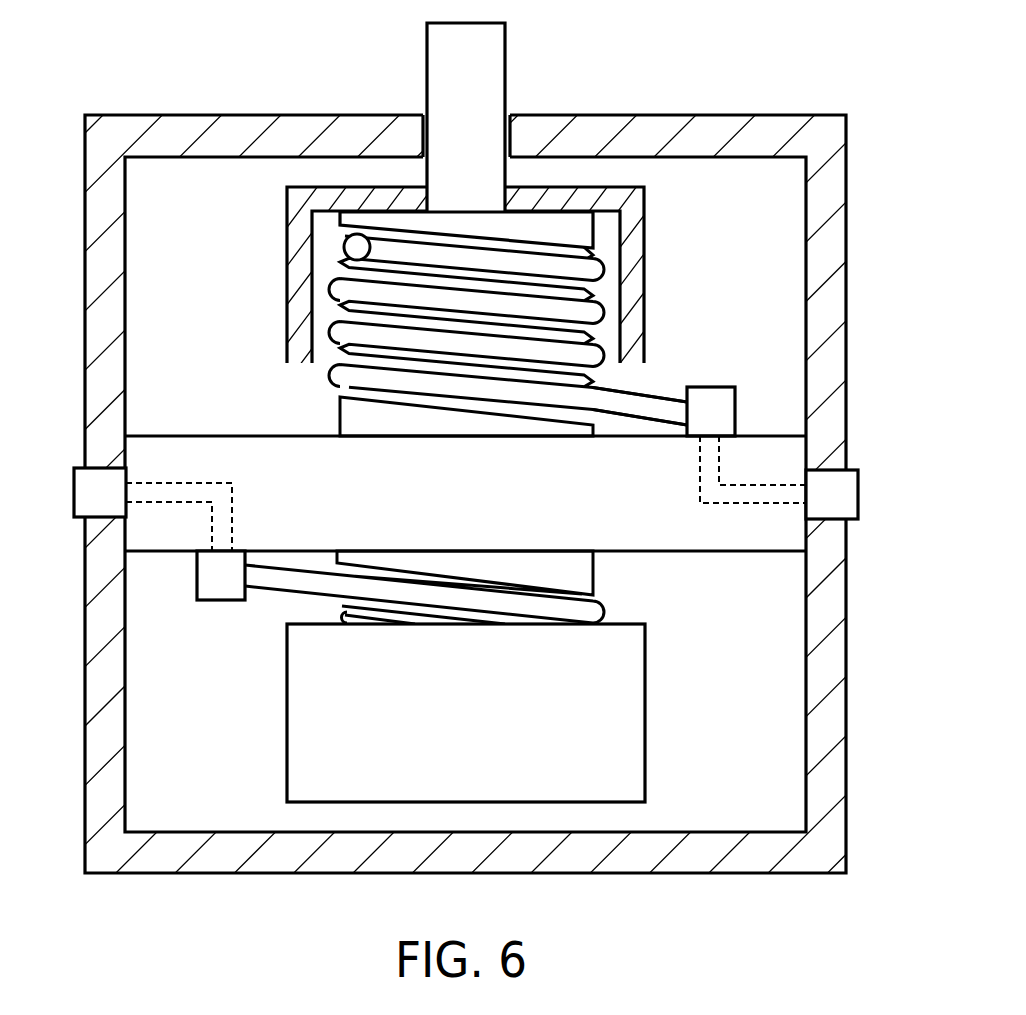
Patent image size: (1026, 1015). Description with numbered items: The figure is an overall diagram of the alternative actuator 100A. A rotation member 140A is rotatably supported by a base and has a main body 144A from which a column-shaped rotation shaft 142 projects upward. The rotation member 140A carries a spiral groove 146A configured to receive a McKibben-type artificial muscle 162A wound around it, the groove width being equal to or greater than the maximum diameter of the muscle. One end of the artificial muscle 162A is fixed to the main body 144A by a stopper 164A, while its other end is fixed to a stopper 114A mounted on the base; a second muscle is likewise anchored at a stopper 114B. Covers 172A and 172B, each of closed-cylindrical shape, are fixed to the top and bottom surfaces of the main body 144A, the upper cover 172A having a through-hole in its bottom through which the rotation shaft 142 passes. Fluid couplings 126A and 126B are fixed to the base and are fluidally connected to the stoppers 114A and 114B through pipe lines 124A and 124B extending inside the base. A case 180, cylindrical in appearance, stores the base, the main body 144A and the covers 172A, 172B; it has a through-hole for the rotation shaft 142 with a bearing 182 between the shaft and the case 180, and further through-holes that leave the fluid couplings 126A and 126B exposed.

The actuator 100A is at (272, 62).
The case 180 is at (725, 112).
The bearing 182 is at (423, 112).
The rotation shaft 142 is at (507, 57).
The rotation member 140A is at (460, 308).
The cover 172A is at (292, 280).
The main body 144A is at (585, 228).
The spiral groove 146A is at (600, 290).
The artificial muscle 162A is at (600, 352).
The stopper 164A is at (345, 245).
The stopper 114A is at (713, 395).
The pipe line 124A is at (750, 503).
The pipe line 124B is at (168, 483).
The fluid coupling 126A is at (835, 470).
The fluid coupling 126B is at (100, 510).
The stopper 114B is at (223, 593).
The cover 172B is at (640, 706).